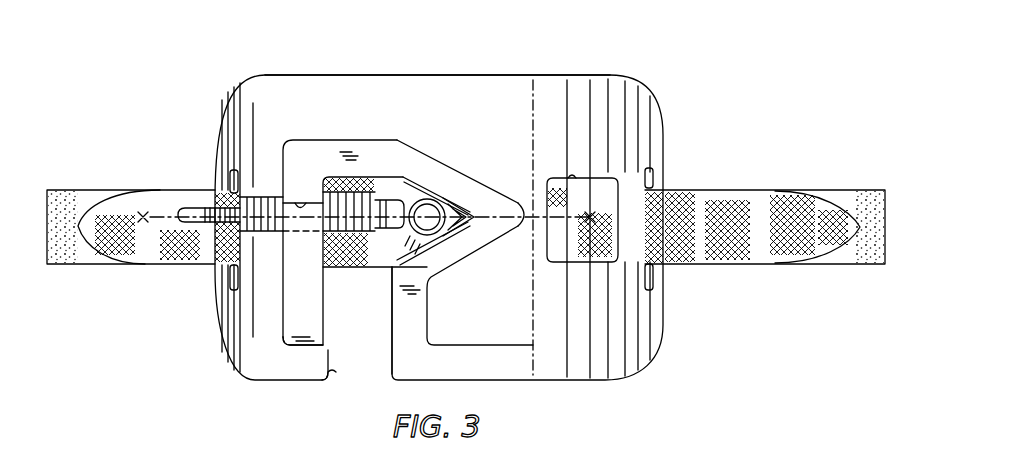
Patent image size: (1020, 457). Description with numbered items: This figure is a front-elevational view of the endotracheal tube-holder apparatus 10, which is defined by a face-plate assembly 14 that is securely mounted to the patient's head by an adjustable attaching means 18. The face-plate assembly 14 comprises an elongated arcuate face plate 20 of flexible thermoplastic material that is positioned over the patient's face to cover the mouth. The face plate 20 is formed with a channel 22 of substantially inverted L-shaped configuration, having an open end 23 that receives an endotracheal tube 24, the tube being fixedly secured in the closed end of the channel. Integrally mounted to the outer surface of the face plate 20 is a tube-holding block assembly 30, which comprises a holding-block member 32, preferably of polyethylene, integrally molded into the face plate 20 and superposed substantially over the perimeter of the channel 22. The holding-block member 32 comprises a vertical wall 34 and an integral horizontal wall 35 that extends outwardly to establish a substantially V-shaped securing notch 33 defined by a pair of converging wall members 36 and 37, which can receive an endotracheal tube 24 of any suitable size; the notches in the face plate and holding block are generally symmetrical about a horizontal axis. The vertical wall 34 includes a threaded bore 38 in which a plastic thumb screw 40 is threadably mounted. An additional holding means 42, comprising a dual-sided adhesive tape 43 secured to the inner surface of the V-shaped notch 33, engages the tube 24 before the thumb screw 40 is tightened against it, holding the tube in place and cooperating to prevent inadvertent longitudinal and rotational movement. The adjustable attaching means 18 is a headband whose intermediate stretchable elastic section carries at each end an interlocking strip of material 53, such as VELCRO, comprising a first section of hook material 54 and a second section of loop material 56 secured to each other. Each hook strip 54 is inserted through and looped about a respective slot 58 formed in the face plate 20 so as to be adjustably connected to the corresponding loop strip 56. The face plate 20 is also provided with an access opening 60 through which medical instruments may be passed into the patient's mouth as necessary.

The endotracheal tube-holder apparatus 10 is at (432, 116).
The face-plate assembly 14 is at (477, 101).
The adjustable attaching means 18 is at (740, 189).
The face plate 20 is at (343, 73).
The channel 22 is at (388, 347).
The open end 23 is at (325, 381).
The endotracheal tube 24 is at (444, 201).
The tube-holding block assembly 30 is at (285, 309).
The holding-block member 32 is at (367, 142).
The V-shaped securing notch 33 is at (453, 227).
The vertical wall 34 is at (290, 325).
The horizontal wall 35 is at (397, 147).
The converging wall member 36 is at (487, 193).
The converging wall member 37 is at (433, 250).
The threaded bore 38 is at (297, 200).
The thumb screw 40 is at (193, 210).
The additional holding means 42 is at (430, 189).
The dual-sided adhesive tape 43 is at (420, 260).
The interlocking strip of material 53 is at (66, 202).
The hook material section 54 is at (137, 242).
The loop material section 56 is at (90, 197).
The slots 58 is at (230, 277).
The access opening 60 is at (574, 175).